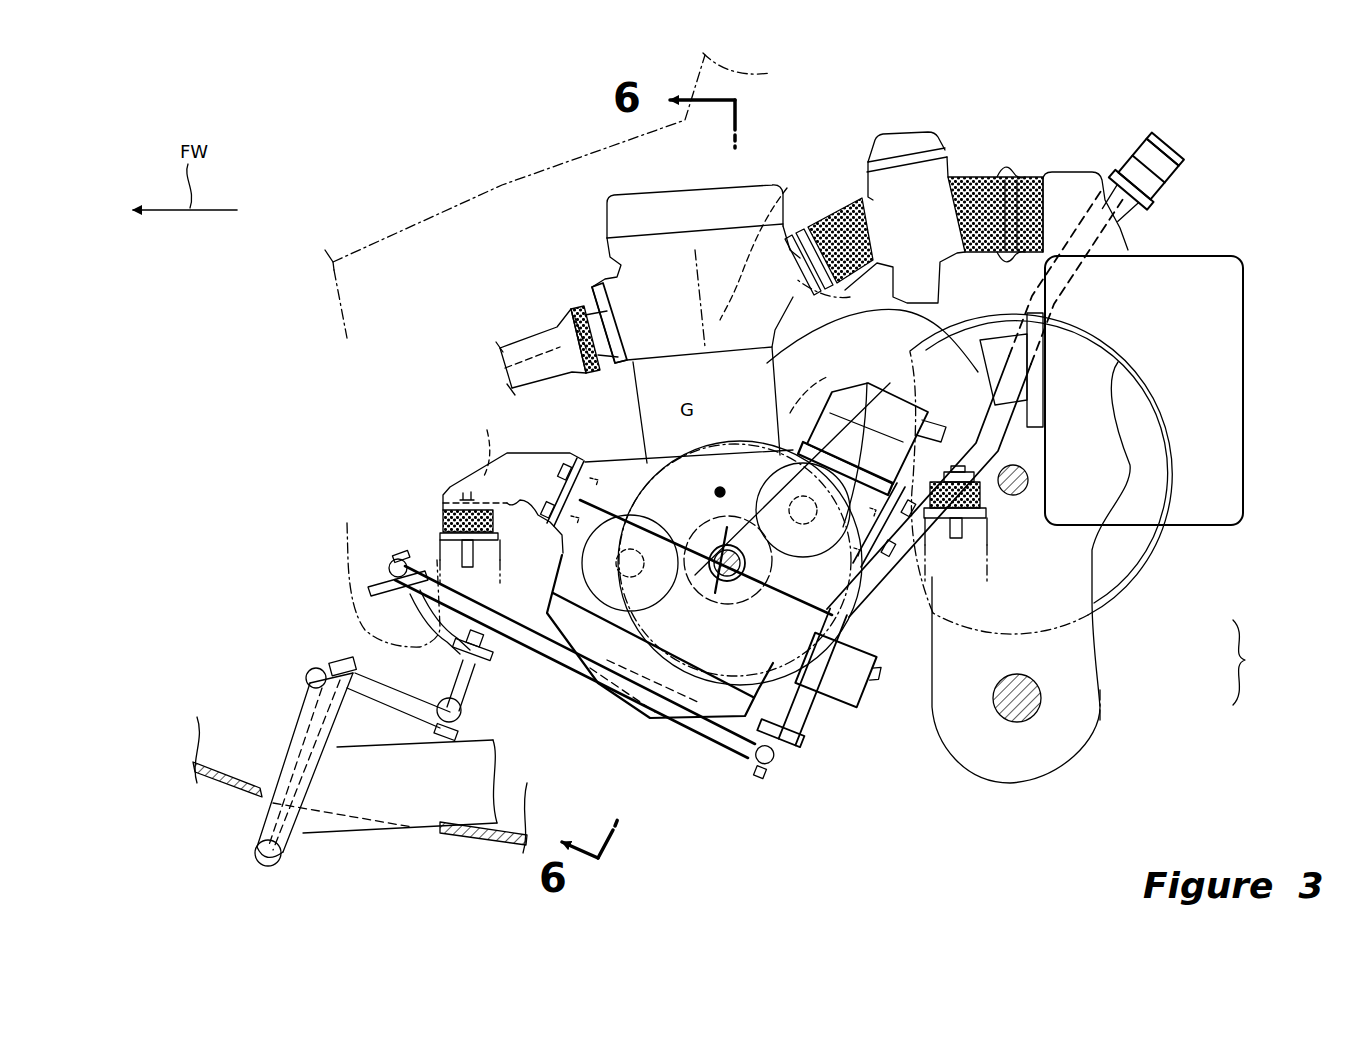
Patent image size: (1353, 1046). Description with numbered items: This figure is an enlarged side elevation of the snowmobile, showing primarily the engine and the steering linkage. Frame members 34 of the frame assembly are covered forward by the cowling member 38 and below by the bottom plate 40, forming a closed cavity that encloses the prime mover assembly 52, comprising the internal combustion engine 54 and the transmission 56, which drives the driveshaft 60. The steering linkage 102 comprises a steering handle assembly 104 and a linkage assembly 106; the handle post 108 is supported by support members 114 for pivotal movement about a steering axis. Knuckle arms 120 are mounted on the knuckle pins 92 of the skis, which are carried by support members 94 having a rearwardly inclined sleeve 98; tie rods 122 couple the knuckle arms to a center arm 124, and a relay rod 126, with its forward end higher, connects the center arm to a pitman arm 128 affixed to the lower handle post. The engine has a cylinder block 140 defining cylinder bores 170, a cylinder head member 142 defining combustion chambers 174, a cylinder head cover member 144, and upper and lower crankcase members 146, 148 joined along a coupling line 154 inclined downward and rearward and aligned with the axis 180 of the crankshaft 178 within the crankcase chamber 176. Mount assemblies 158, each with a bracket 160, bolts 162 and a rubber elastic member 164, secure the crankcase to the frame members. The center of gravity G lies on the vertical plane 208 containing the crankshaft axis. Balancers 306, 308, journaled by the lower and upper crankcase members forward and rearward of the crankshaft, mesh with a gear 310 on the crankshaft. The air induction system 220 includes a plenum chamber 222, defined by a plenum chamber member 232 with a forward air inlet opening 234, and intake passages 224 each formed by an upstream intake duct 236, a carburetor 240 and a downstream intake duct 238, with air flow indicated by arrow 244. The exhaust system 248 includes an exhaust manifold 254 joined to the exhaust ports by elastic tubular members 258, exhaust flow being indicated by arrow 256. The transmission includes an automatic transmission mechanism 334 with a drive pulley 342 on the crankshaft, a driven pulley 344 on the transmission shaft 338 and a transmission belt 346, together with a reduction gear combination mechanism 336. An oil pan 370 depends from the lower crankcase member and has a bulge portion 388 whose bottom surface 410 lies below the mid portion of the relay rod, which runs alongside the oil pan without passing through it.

The frame members 34 is at (437, 560).
The cowling member 38 is at (502, 185).
The bottom plate 40 is at (497, 857).
The prime mover assembly 52 is at (390, 197).
The internal combustion engine 54 is at (770, 152).
The transmission 56 is at (1259, 662).
The driveshaft 60 is at (1040, 717).
The knuckle pin 92 is at (257, 847).
The support member 94 is at (413, 803).
The sleeve 98 is at (290, 740).
The steering linkage 102 is at (783, 800).
The steering handle assembly 104 is at (1131, 190).
The linkage assembly 106 is at (525, 650).
The handle post 108 is at (1165, 217).
The support members 114 is at (1000, 467).
The knuckle arms 120 is at (397, 710).
The tie rods 122 is at (470, 715).
The center arm 124 is at (395, 648).
The relay rod 126 is at (725, 745).
The pitman arm 128 is at (772, 753).
The cylinder block 140 is at (776, 366).
The cylinder head member 142 is at (627, 250).
The cylinder head cover member 144 is at (687, 212).
The upper crankcase member 146 is at (607, 473).
The lower crankcase member 148 is at (562, 528).
The coupling line 154 is at (890, 628).
The mount assemblies 158 is at (990, 504).
The bracket 160 is at (487, 477).
The bolts 162 is at (493, 447).
The elastic member 164 is at (463, 517).
The cylinder bores 170 is at (773, 412).
The combustion chambers 174 is at (774, 242).
The crankcase chamber 176 is at (840, 672).
The crankshaft 178 is at (712, 575).
The axis 180 is at (738, 578).
The vertical plane 208 is at (693, 330).
The air induction system 220 is at (1088, 143).
The plenum chamber 222 is at (1195, 380).
The air intake passages 224 is at (972, 172).
The plenum chamber member 232 is at (1222, 296).
The air inlet opening 234 is at (1000, 333).
The upstream intake duct 236 is at (985, 187).
The downstream intake duct 238 is at (857, 227).
The carburetor 240 is at (927, 195).
The arrow 244 is at (765, 300).
The exhaust system 248 is at (502, 353).
The exhaust manifold 254 is at (522, 353).
The arrow 256 is at (468, 383).
The intermediate tubular members 258 is at (568, 308).
The balancer 306 is at (572, 657).
The balancer 308 is at (743, 473).
The gear 310 is at (693, 430).
The automatic transmission mechanism 334 is at (1124, 603).
The reduction gear combination mechanism 336 is at (1107, 680).
The transmission shaft 338 is at (1027, 470).
The drive pulley 342 is at (627, 462).
The driven pulley 344 is at (1172, 507).
The transmission belt 346 is at (1165, 533).
The oil pan 370 is at (627, 708).
The bulge portion 388 is at (697, 690).
The bottom surface 410 is at (640, 717).